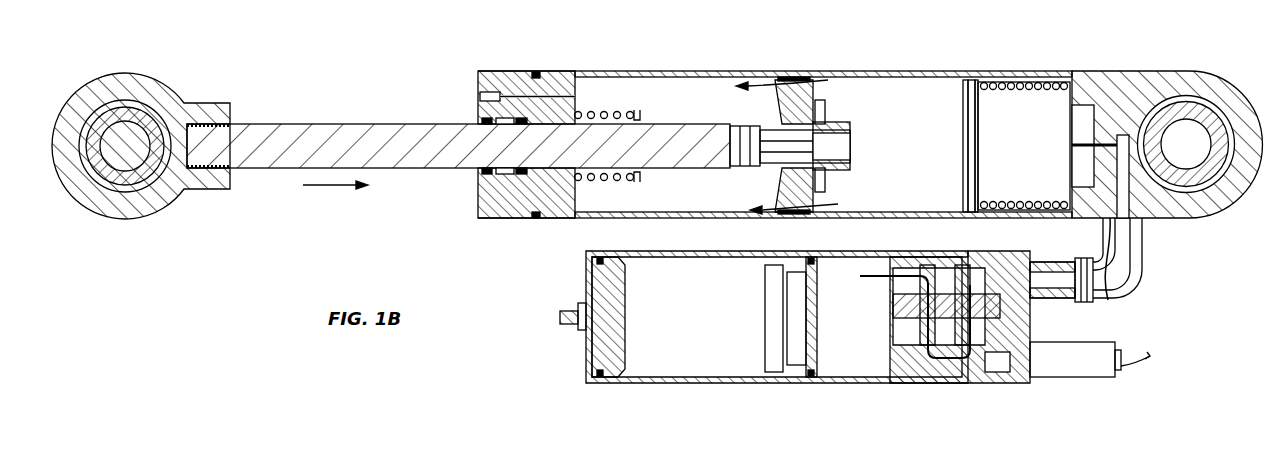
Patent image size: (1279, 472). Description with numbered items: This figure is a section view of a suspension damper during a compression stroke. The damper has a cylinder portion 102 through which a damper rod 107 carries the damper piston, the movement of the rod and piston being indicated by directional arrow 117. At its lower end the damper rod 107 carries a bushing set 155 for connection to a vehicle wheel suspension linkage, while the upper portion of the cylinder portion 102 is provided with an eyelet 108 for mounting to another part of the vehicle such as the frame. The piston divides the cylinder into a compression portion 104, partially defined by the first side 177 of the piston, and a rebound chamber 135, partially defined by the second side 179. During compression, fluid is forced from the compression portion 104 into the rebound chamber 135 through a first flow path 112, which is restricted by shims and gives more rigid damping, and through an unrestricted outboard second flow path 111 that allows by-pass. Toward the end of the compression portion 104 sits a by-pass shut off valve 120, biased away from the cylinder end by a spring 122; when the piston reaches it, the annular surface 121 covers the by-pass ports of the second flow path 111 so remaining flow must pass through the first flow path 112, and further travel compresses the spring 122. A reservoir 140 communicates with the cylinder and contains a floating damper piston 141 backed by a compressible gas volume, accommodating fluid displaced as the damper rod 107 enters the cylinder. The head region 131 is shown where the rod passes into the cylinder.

The cylinder portion 102 is at (905, 72).
The compression portion 104 is at (929, 150).
The damper rod 107 is at (290, 124).
The eyelet 108 is at (1185, 135).
The second flow path 111 is at (798, 77).
The first flow path 112 is at (790, 213).
The directional arrow 117 is at (328, 187).
The by-pass shut off valve 120 is at (982, 82).
The annular surface 121 is at (962, 205).
The spring 122 is at (1040, 85).
The rod guide head 131 is at (604, 182).
The rebound chamber 135 is at (703, 196).
The reservoir 140 is at (555, 352).
The floating damper piston 141 is at (775, 382).
The bushing set 155 is at (117, 72).
The first side 177 is at (825, 110).
The second side 179 is at (770, 112).